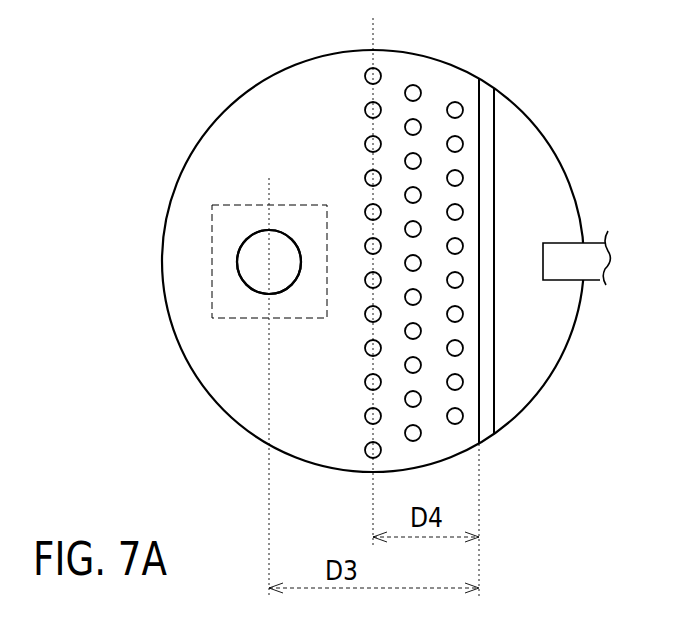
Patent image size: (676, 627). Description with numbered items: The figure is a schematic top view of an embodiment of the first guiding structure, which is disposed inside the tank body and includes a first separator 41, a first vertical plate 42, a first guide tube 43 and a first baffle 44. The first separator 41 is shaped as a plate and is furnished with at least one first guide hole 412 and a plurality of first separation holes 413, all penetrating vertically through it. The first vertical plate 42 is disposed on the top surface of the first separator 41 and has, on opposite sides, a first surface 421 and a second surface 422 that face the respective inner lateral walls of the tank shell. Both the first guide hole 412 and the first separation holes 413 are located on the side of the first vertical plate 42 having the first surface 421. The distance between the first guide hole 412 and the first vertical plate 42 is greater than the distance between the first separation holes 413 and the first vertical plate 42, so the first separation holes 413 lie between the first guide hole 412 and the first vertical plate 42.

The first separator 41 is at (228, 130).
The first guide hole 412 is at (243, 243).
The first separation hole 413 is at (364, 76).
The first vertical plate 42 is at (495, 228).
The first surface 421 is at (478, 98).
The second surface 422 is at (495, 130).
The first guide tube 43 is at (257, 280).
The first baffle 44 is at (211, 268).